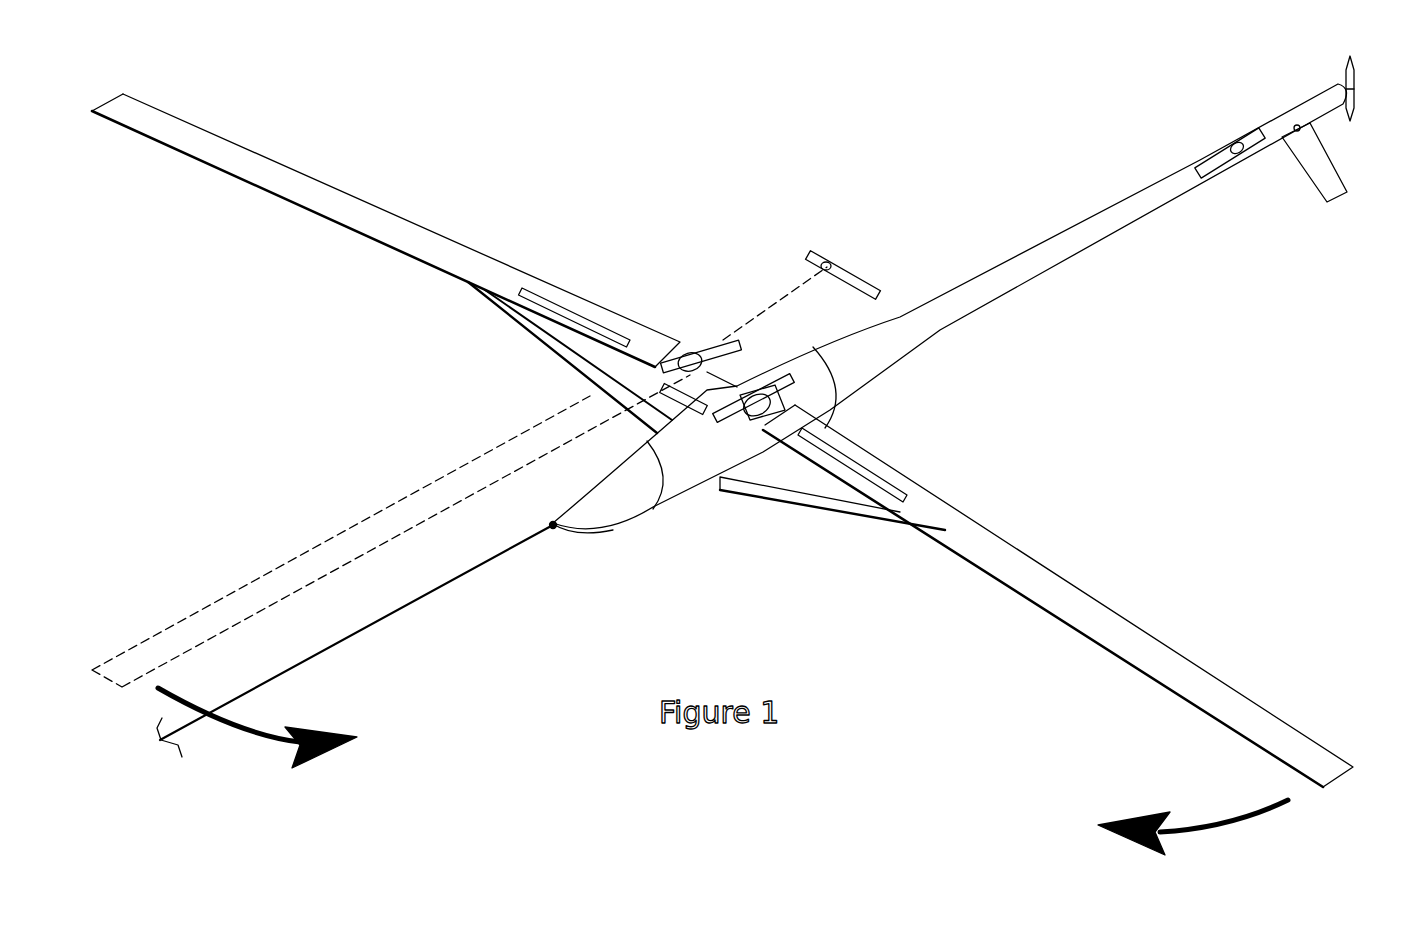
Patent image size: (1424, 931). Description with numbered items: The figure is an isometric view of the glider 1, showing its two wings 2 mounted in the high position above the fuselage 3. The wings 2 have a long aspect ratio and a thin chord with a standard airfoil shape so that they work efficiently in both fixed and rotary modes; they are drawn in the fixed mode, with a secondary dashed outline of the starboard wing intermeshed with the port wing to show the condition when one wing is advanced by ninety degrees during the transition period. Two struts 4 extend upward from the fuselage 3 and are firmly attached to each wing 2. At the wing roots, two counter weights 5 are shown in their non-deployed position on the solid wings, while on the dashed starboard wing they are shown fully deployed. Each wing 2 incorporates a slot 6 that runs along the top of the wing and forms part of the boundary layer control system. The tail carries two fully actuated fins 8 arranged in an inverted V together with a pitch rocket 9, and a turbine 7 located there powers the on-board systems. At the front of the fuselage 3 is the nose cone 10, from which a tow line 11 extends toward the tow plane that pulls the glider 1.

The glider 1 is at (778, 80).
The wing 2 is at (290, 190).
The fuselage 3 is at (687, 463).
The strut 4 is at (590, 352).
The counter weight 5 is at (728, 340).
The slot 6 is at (600, 323).
The turbine 7 is at (1360, 103).
The fin 8 is at (1318, 165).
The pitch rocket 9 is at (1222, 145).
The nose cone 10 is at (605, 490).
The tow line 11 is at (497, 557).